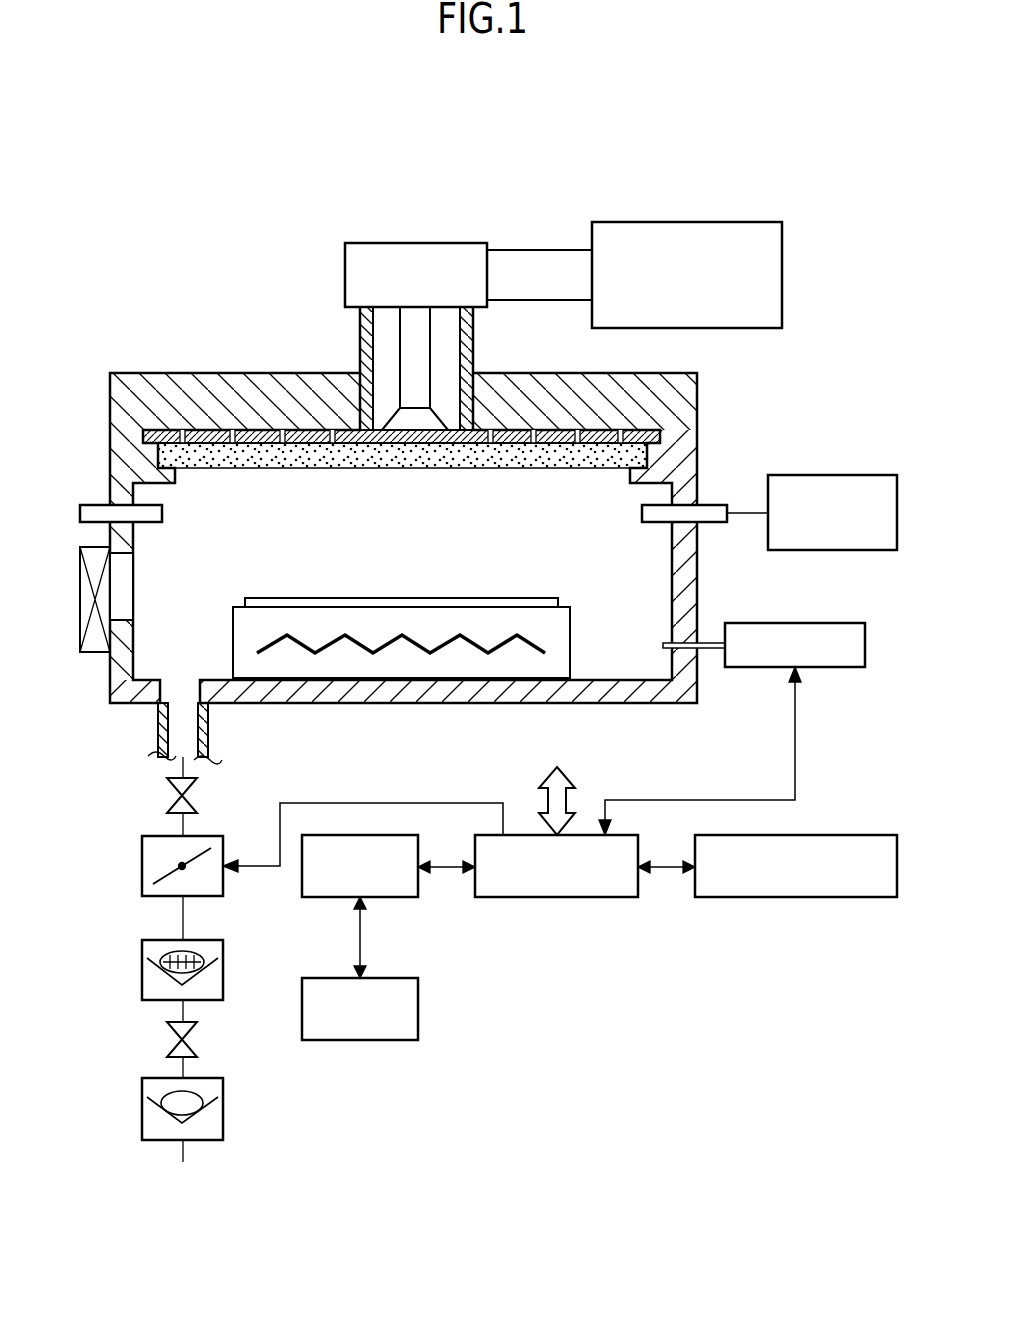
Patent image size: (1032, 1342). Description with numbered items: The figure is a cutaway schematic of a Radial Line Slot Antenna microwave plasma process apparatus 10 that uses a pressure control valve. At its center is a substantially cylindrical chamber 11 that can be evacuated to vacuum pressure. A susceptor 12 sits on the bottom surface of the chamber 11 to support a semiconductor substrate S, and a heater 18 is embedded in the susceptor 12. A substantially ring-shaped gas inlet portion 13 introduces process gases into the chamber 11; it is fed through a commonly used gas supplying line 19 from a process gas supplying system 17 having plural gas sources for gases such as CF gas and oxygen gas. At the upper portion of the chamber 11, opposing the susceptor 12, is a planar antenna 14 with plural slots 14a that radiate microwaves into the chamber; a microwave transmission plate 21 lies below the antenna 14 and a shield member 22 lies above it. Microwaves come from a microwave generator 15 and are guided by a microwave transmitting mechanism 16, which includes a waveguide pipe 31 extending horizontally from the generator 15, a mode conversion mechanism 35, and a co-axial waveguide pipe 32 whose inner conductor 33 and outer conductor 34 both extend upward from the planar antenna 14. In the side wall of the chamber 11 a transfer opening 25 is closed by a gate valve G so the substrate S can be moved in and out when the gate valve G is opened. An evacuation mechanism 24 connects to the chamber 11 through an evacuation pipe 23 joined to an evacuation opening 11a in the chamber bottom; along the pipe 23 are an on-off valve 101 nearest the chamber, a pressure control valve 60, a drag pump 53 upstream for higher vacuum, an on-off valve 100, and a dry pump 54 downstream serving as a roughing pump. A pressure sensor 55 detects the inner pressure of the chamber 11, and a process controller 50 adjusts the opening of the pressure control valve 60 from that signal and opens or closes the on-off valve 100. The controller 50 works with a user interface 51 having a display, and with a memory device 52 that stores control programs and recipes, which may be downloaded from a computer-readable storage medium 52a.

The RLSA microwave plasma process apparatus 10 is at (665, 128).
The chamber 11 is at (441, 505).
The evacuation opening 11a is at (180, 680).
The susceptor 12 is at (572, 640).
The gas inlet portion 13 is at (97, 504).
The planar antenna 14 is at (648, 432).
The slots 14a is at (333, 443).
The microwave generator 15 is at (730, 222).
The microwave transmitting mechanism 16 is at (492, 205).
The process gas supplying system 17 is at (828, 475).
The heater 18 is at (526, 640).
The gas supplying line 19 is at (745, 522).
The microwave transmission plate 21 is at (240, 468).
The shield member 22 is at (178, 372).
The evacuation pipe 23 is at (157, 740).
The evacuation mechanism 24 is at (102, 812).
The transfer opening 25 is at (133, 599).
The waveguide pipe 31 is at (553, 250).
The co-axial waveguide pipe 32 is at (338, 358).
The inner conductor 33 is at (425, 338).
The outer conductor 34 is at (360, 327).
The mode conversion mechanism 35 is at (397, 243).
The process controller 50 is at (592, 897).
The user interface 51 is at (797, 897).
The memory device 52 is at (398, 897).
The computer-readable storage medium 52a is at (398, 1040).
The drag pump 53 is at (142, 972).
The dry pump 54 is at (142, 1110).
The pressure sensor 55 is at (828, 623).
The pressure control valve 60 is at (142, 866).
The on-off valve 100 is at (198, 1040).
The on-off valve 101 is at (198, 795).
The semiconductor substrate S is at (245, 598).
The gate valve G is at (97, 652).